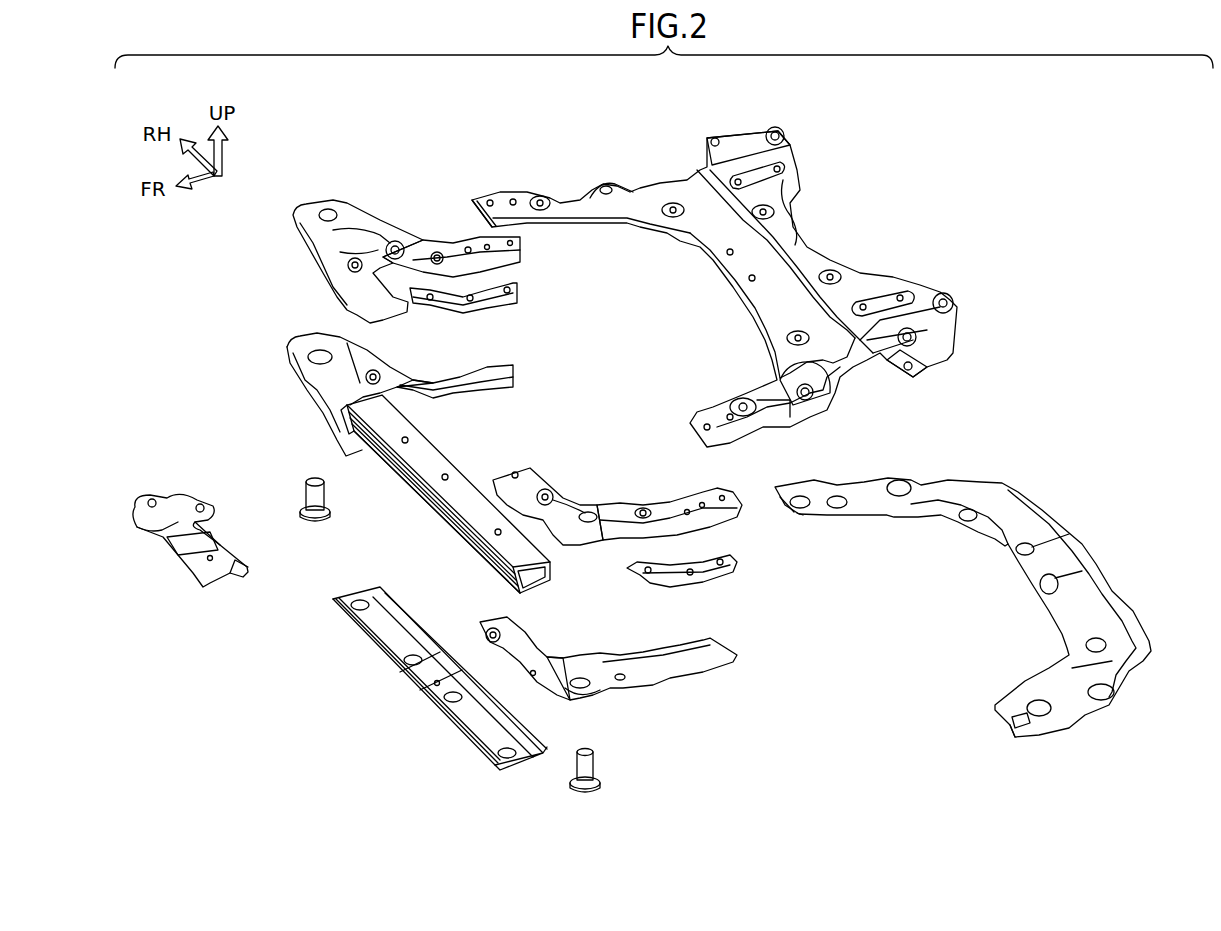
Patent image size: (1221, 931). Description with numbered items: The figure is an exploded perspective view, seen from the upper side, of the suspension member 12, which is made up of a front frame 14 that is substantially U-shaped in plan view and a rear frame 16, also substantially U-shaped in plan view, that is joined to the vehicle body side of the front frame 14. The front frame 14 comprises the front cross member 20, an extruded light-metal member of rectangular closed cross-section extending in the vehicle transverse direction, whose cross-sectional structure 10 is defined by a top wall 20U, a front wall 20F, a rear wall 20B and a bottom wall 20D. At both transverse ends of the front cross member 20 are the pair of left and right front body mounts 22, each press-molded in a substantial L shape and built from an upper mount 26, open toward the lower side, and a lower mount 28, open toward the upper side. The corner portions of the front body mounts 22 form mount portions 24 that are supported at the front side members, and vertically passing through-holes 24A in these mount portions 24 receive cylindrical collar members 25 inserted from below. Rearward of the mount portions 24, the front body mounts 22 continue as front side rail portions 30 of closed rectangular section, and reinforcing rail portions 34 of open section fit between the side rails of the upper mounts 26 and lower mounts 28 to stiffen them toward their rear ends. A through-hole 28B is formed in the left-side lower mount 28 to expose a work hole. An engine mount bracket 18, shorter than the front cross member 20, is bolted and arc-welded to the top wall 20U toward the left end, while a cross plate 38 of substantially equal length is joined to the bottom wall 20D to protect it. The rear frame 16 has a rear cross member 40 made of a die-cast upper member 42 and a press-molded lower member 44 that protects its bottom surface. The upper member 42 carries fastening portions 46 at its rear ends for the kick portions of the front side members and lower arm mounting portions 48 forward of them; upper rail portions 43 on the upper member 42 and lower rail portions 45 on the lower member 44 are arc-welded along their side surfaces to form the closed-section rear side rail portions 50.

The cross-sectional structure 10 is at (528, 598).
The suspension member 12 is at (714, 280).
The front frame 14 is at (477, 515).
The rear frame 16 is at (970, 277).
The engine mount bracket 18 is at (200, 505).
The front cross member 20 is at (486, 515).
The top wall 20U is at (458, 490).
The front wall 20F is at (400, 477).
The rear wall 20B is at (550, 573).
The bottom wall 20D is at (528, 602).
The front body mounts 22 is at (440, 474).
The mount portions 24 is at (310, 200).
The through-holes 24A is at (328, 215).
The collar members 25 is at (306, 497).
The upper mounts 26 is at (297, 230).
The lower mounts 28 is at (464, 528).
The through-hole 28B is at (493, 642).
The front side rail portions 30 is at (477, 238).
The reinforcing rail portions 34 is at (487, 303).
The cross plate 38 is at (400, 673).
The rear cross member 40 is at (846, 442).
The upper member 42 is at (808, 240).
The upper rail portions 43 is at (580, 202).
The lower member 44 is at (998, 614).
The lower rail portions 45 is at (844, 519).
The fastening portions 46 is at (778, 130).
The lower arm mounting portions 48 is at (740, 147).
The rear side rail portions 50 is at (520, 185).